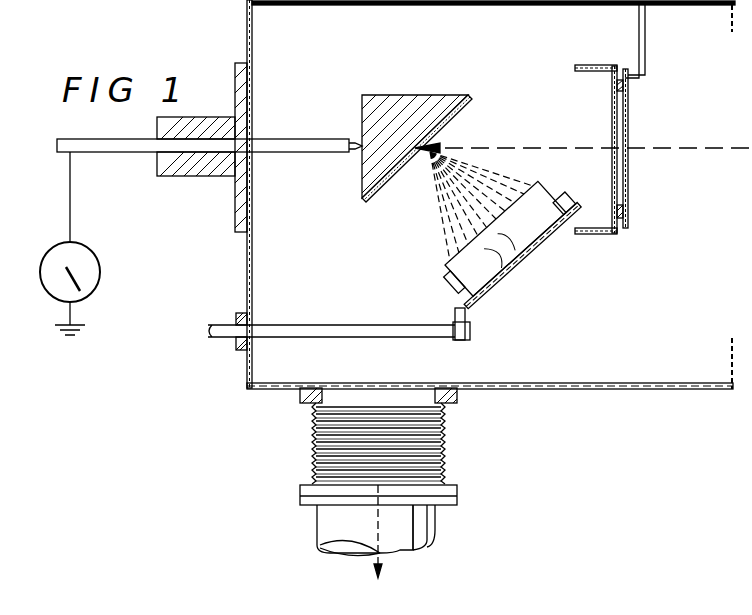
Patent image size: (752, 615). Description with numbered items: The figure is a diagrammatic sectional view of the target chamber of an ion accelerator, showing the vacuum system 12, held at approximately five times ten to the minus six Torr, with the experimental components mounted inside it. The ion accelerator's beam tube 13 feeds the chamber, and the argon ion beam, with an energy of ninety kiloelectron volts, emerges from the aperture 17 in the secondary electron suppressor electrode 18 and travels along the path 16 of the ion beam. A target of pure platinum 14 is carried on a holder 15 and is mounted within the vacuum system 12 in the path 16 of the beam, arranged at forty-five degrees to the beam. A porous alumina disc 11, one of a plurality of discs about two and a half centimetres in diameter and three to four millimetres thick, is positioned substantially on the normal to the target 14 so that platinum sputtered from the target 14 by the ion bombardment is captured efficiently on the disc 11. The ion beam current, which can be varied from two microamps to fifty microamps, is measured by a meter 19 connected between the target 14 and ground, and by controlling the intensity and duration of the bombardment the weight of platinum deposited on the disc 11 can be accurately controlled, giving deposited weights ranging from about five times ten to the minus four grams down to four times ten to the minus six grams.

The porous alumina disc 11 is at (508, 258).
The vacuum system 12 is at (431, 50).
The beam tube 13 is at (713, 7).
The target of pure platinum 14 is at (452, 112).
The holder 15 is at (388, 122).
The path of the ion beam 16 is at (710, 135).
The aperture 17 is at (629, 148).
The secondary electron suppressor electrode 18 is at (630, 98).
The meter 19 is at (100, 258).